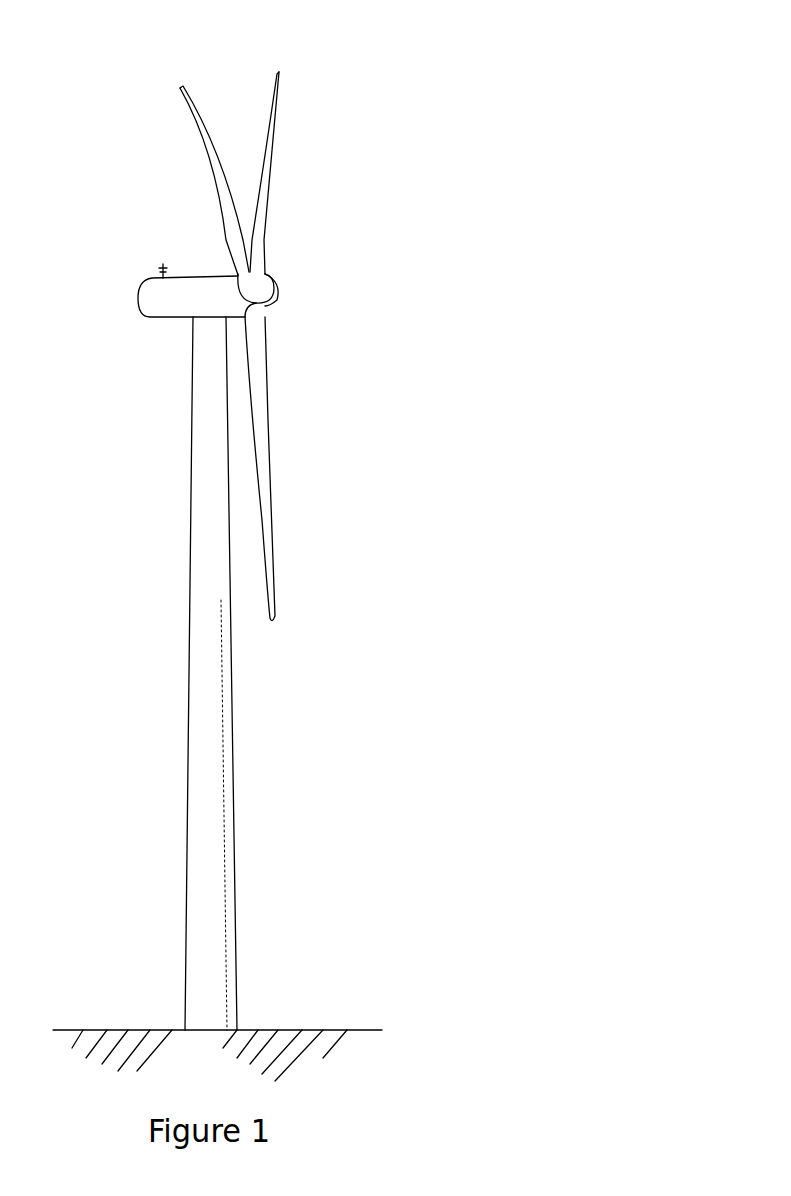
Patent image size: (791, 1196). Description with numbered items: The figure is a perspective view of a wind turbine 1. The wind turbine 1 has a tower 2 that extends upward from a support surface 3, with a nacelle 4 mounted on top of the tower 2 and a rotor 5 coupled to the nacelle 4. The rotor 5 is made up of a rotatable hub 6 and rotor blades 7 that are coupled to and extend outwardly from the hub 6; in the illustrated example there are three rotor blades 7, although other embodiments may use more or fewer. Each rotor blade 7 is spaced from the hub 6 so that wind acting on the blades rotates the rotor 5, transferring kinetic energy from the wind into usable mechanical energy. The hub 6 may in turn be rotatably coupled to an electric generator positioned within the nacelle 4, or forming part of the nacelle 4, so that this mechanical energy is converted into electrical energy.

The wind turbine 1 is at (381, 140).
The tower 2 is at (202, 773).
The support surface 3 is at (122, 1030).
The nacelle 4 is at (173, 320).
The rotor 5 is at (283, 271).
The rotatable hub 6 is at (277, 297).
The rotor blade 7 is at (270, 108).